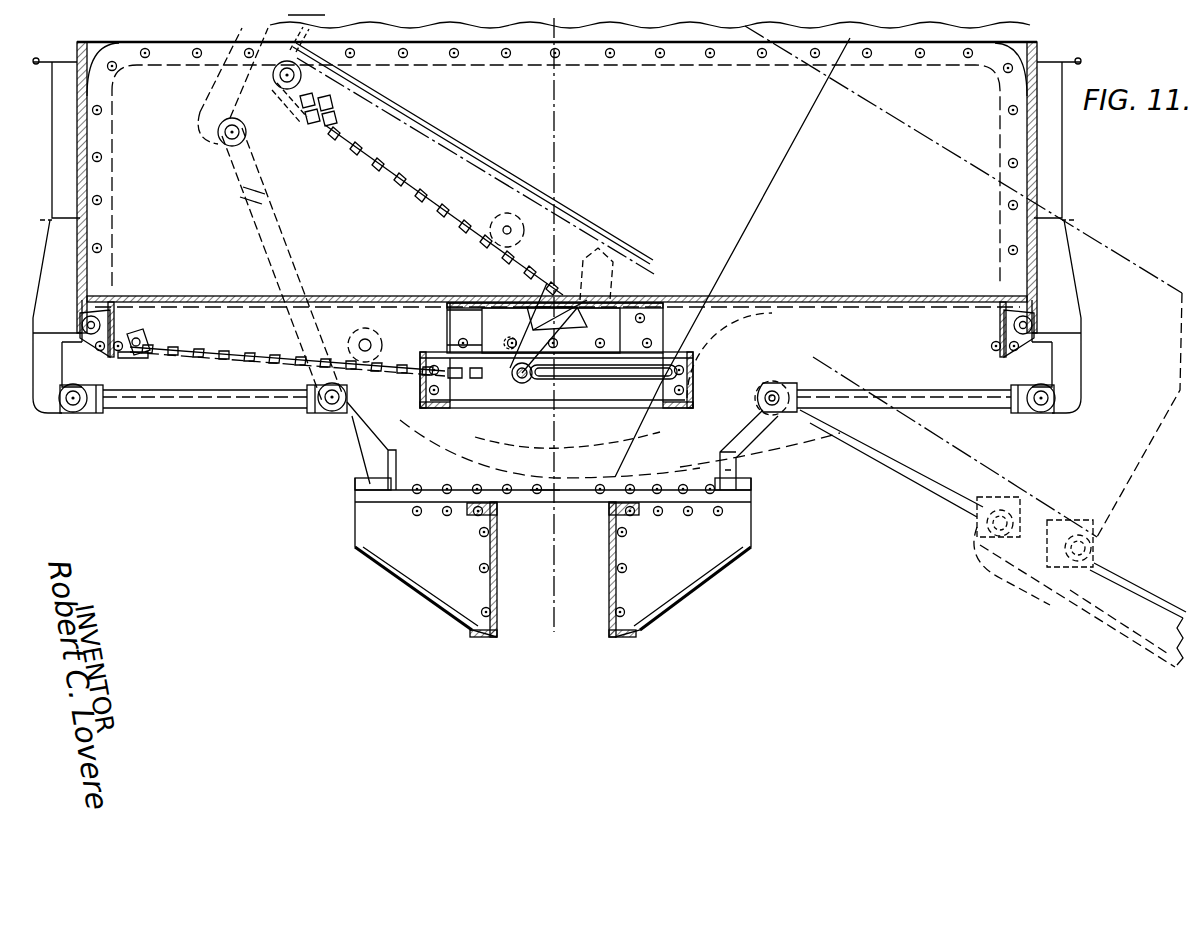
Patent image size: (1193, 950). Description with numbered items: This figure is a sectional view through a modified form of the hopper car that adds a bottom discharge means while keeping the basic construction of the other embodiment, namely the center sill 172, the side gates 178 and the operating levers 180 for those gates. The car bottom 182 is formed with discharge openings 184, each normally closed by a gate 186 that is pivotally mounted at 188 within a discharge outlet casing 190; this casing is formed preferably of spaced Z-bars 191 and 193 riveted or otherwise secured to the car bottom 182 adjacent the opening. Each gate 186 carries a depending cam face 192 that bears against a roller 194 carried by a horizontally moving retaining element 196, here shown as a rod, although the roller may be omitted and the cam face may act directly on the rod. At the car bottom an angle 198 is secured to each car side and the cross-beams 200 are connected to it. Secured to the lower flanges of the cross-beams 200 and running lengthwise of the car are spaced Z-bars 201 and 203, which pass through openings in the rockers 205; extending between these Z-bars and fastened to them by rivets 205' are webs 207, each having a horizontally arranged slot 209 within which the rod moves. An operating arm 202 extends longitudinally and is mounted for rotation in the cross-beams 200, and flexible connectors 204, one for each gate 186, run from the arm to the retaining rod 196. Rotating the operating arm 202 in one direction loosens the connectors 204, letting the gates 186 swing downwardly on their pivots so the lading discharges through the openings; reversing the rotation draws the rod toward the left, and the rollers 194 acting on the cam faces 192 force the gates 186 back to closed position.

The center sill 172 is at (553, 557).
The side gates 178 is at (559, 235).
The operating levers 180 is at (644, 346).
The car bottom 182 is at (557, 288).
The discharge openings 184 is at (444, 219).
The gate 186 is at (608, 280).
The pivot 188 is at (693, 282).
The discharge outlet casing 190 is at (555, 308).
The Z-bar 191 is at (442, 312).
The cam face 192 is at (556, 360).
The Z-bar 193 is at (732, 257).
The roller 194 is at (603, 397).
The retaining element 196 is at (538, 369).
The angle 198 is at (556, 341).
The cross-beams 200 is at (287, 359).
The Z-bar 201 is at (351, 436).
The operating arm 202 is at (158, 337).
The Z-bar 203 is at (745, 435).
The flexible connectors 204 is at (287, 374).
The rockers 205 is at (537, 507).
The rivets 205' is at (748, 364).
The webs 207 is at (620, 449).
The slot 209 is at (567, 433).